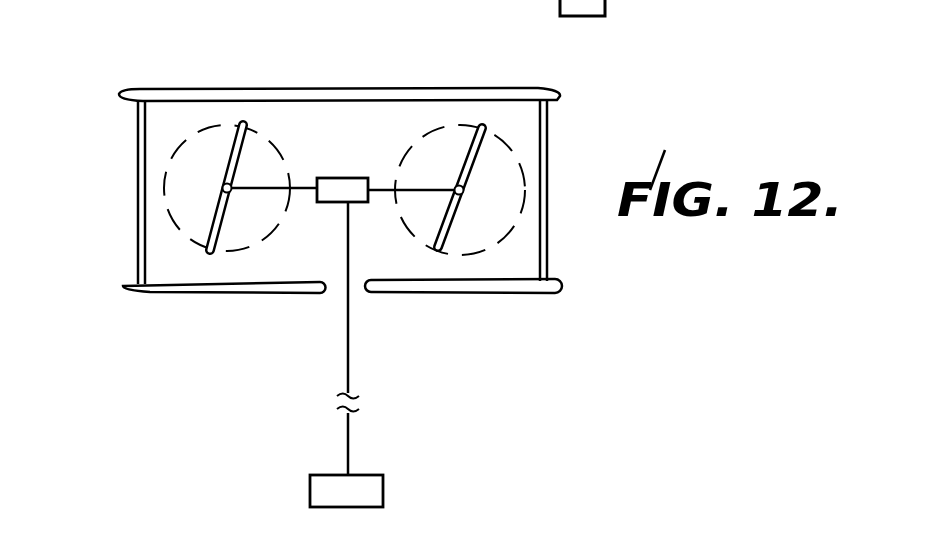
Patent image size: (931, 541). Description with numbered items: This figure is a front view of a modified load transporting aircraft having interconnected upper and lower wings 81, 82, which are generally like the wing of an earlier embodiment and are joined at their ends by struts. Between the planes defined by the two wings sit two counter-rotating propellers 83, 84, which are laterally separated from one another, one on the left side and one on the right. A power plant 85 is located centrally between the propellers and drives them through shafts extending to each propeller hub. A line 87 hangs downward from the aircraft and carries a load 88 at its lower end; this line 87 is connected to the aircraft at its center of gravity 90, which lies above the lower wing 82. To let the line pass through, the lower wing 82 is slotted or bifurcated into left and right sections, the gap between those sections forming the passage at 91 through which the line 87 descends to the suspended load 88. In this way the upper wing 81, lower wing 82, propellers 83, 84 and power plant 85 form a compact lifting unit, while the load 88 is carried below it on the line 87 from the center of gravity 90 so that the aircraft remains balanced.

The upper wing 81 is at (272, 90).
The lower wing 82 is at (185, 293).
The propeller 83 is at (478, 151).
The propeller 84 is at (237, 157).
The power plant 85 is at (345, 178).
The line 87 is at (349, 375).
The load 88 is at (370, 487).
The center of gravity 90 is at (352, 202).
The slot 91 is at (337, 288).